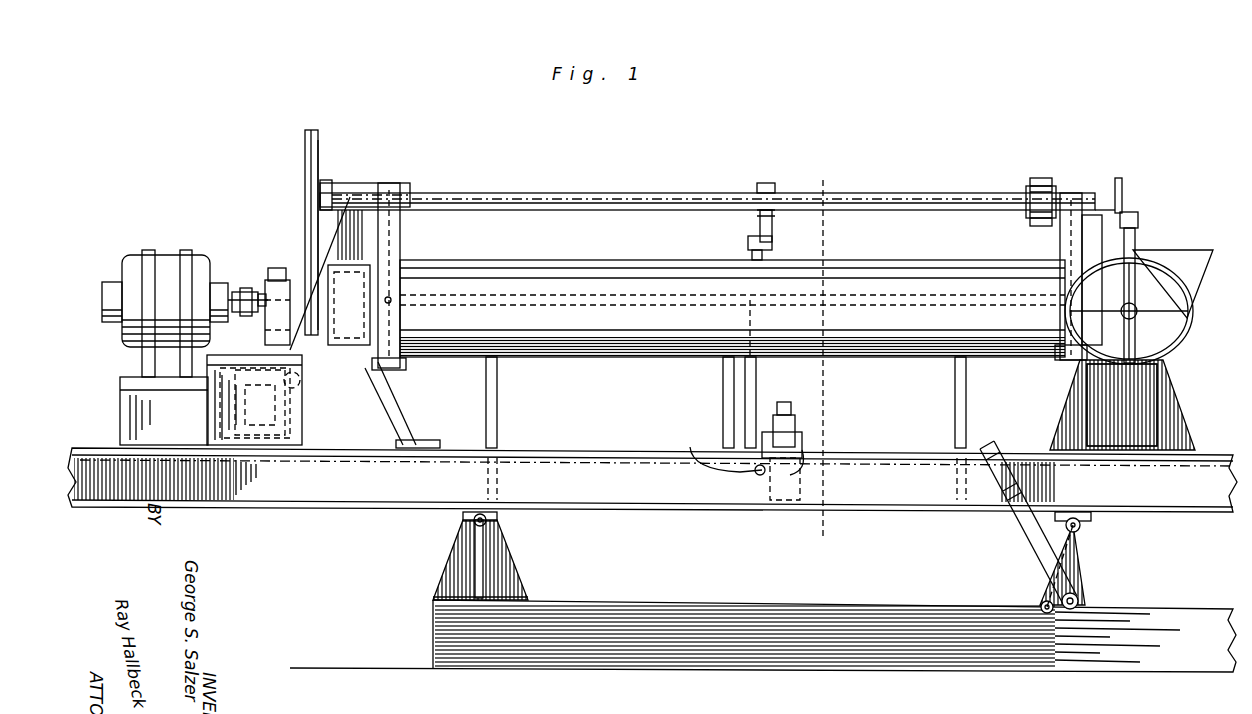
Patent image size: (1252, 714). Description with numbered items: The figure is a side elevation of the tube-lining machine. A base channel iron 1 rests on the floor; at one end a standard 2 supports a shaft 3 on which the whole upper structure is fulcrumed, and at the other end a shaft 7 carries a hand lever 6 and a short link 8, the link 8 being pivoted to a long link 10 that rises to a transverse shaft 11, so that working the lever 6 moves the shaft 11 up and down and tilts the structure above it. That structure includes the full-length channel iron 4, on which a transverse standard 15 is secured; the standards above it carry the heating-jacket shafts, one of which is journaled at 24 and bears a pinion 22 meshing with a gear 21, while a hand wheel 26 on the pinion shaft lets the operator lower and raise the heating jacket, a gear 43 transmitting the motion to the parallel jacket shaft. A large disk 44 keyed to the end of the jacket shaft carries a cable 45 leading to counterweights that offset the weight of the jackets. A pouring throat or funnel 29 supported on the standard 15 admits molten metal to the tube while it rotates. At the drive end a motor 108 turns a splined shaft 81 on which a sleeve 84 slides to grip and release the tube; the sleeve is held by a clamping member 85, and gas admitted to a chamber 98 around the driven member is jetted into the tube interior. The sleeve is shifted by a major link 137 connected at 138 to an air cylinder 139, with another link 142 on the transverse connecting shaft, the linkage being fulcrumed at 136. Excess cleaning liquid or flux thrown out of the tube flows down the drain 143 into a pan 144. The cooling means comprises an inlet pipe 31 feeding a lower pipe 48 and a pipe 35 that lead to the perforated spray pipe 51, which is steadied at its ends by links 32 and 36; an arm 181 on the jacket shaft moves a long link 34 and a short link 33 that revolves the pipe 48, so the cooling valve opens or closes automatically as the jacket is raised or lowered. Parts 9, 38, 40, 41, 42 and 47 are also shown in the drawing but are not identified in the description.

The channel iron 1 is at (905, 618).
The standard 2 is at (515, 570).
The shaft 3 is at (472, 521).
The channel iron 4 is at (385, 510).
The hand lever 6 is at (1030, 520).
The shaft 7 is at (1080, 600).
The short link 8 is at (1040, 600).
The pivot pin 9 is at (1040, 607).
The long link 10 is at (1082, 556).
The transverse shaft 11 is at (1082, 527).
The transverse supporting standard 15 is at (1170, 404).
The gear 21 is at (1123, 186).
The pinion 22 is at (1138, 215).
The journal 24 is at (1136, 233).
The hand wheel 26 is at (1175, 343).
The pouring throat or funnel 29 is at (1181, 284).
The cooling fluid inlet pipe 31 is at (782, 424).
The link 32 is at (968, 402).
The short link 33 is at (760, 478).
The long link 34 is at (756, 385).
The pipe 35 is at (723, 388).
The link 36 is at (497, 392).
The bracket 38 is at (772, 243).
The cylinder 40 is at (882, 270).
The end frame 41 is at (1060, 246).
The end frame 42 is at (400, 236).
The gear 43 is at (1042, 180).
The large disk 44 is at (305, 165).
The cable 45 is at (318, 136).
The frame 47 is at (330, 273).
The pipe 48 is at (690, 447).
The spray pipe 51 is at (556, 292).
The shaft 81 is at (255, 295).
The sleeve 84 is at (285, 282).
The clamping member 85 is at (276, 270).
The chamber 98 is at (258, 320).
The motor 108 is at (125, 256).
The fulcrum 136 is at (268, 340).
The major link 137 is at (294, 405).
The connection 138 is at (284, 402).
The air cylinder 139 is at (300, 380).
The link 142 is at (350, 185).
The drain 143 is at (392, 400).
The pan 144 is at (418, 445).
The arm 181 is at (758, 221).